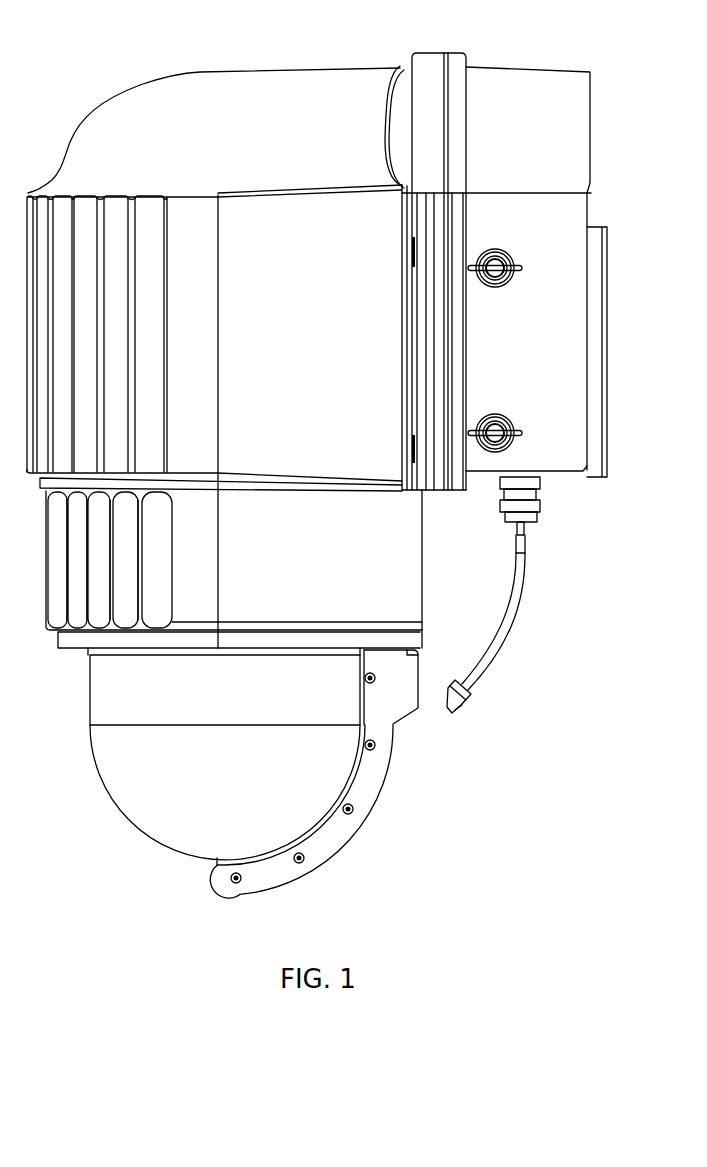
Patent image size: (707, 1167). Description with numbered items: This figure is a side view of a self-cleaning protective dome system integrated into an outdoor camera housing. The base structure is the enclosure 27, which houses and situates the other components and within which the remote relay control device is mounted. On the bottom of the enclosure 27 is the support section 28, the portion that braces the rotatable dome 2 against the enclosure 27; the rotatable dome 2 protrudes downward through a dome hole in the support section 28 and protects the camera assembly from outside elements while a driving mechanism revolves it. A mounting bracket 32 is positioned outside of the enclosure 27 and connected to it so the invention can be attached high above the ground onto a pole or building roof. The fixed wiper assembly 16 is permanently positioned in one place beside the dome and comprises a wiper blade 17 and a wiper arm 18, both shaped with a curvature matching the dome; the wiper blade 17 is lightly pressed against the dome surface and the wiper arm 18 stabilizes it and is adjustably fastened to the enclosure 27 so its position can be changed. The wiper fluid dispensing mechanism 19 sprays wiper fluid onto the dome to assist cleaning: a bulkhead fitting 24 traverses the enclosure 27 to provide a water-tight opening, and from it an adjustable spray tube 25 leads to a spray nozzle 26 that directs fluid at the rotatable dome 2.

The rotatable dome 2 is at (110, 820).
The fixed wiper assembly 16 is at (293, 791).
The wiper blade 17 is at (220, 866).
The wiper arm 18 is at (277, 884).
The wiper fluid dispensing mechanism 19 is at (534, 619).
The bulkhead fitting 24 is at (537, 503).
The adjustable spray tube 25 is at (507, 630).
The spray nozzle 26 is at (463, 703).
The enclosure 27 is at (101, 62).
The support section 28 is at (237, 641).
The mounting bracket 32 is at (597, 337).